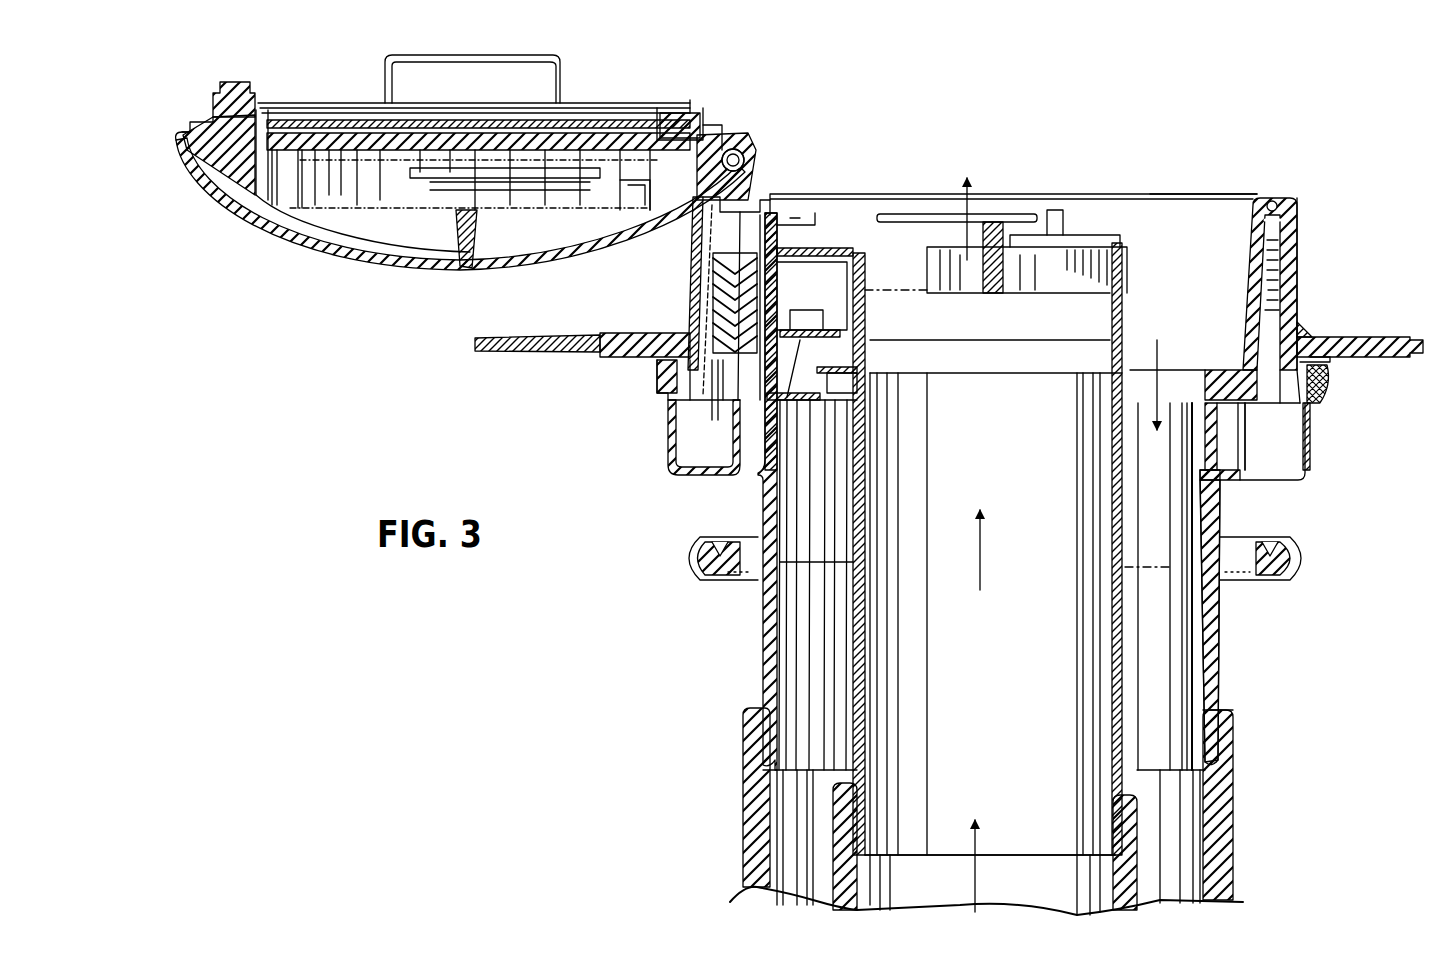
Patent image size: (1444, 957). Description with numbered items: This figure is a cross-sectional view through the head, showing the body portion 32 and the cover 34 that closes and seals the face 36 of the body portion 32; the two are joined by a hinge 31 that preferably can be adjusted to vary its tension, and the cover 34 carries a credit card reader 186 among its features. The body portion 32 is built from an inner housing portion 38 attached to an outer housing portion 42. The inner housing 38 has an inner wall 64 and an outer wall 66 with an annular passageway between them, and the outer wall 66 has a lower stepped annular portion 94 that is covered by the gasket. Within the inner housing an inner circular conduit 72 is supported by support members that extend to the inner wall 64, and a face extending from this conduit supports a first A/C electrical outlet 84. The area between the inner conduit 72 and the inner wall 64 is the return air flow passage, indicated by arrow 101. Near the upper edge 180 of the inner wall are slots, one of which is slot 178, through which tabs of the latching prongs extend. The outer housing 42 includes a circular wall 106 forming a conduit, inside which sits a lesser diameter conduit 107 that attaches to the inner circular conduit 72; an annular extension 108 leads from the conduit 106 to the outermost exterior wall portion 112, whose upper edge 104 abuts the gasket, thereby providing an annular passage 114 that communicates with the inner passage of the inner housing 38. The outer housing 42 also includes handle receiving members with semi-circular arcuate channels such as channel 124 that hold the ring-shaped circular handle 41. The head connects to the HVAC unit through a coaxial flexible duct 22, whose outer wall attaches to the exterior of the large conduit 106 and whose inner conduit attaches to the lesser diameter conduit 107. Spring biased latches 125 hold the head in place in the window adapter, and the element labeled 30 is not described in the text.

The coaxial flexible duct 22 is at (742, 845).
The flange 30 is at (1388, 340).
The hinge 31 is at (744, 156).
The body portion 32 is at (1366, 274).
The cover 34 is at (480, 179).
The face 36 is at (879, 182).
The inner housing portion 38 is at (1302, 224).
The circular handle 41 is at (680, 548).
The outer housing portion 42 is at (1310, 522).
The inner wall 64 is at (1240, 330).
The outer wall 66 is at (1295, 283).
The inner circular conduit 72 is at (1128, 322).
The first A/C electrical outlet 84 is at (858, 228).
The lower stepped annular portion 94 is at (1330, 385).
The arrow 101 is at (1170, 352).
The upper edge 104 is at (1312, 408).
The circular wall 106 is at (1219, 632).
The lesser diameter conduit 107 is at (866, 550).
The annular extension 108 is at (1245, 480).
The exterior wall portion 112 is at (1305, 478).
The annular passage 114 is at (1290, 448).
The semi-circular arcuate channel 124 is at (876, 880).
The spring biased latch 125 is at (1305, 328).
The slot 178 is at (925, 214).
The upper edge 180 is at (1215, 200).
The credit card reader 186 is at (392, 96).